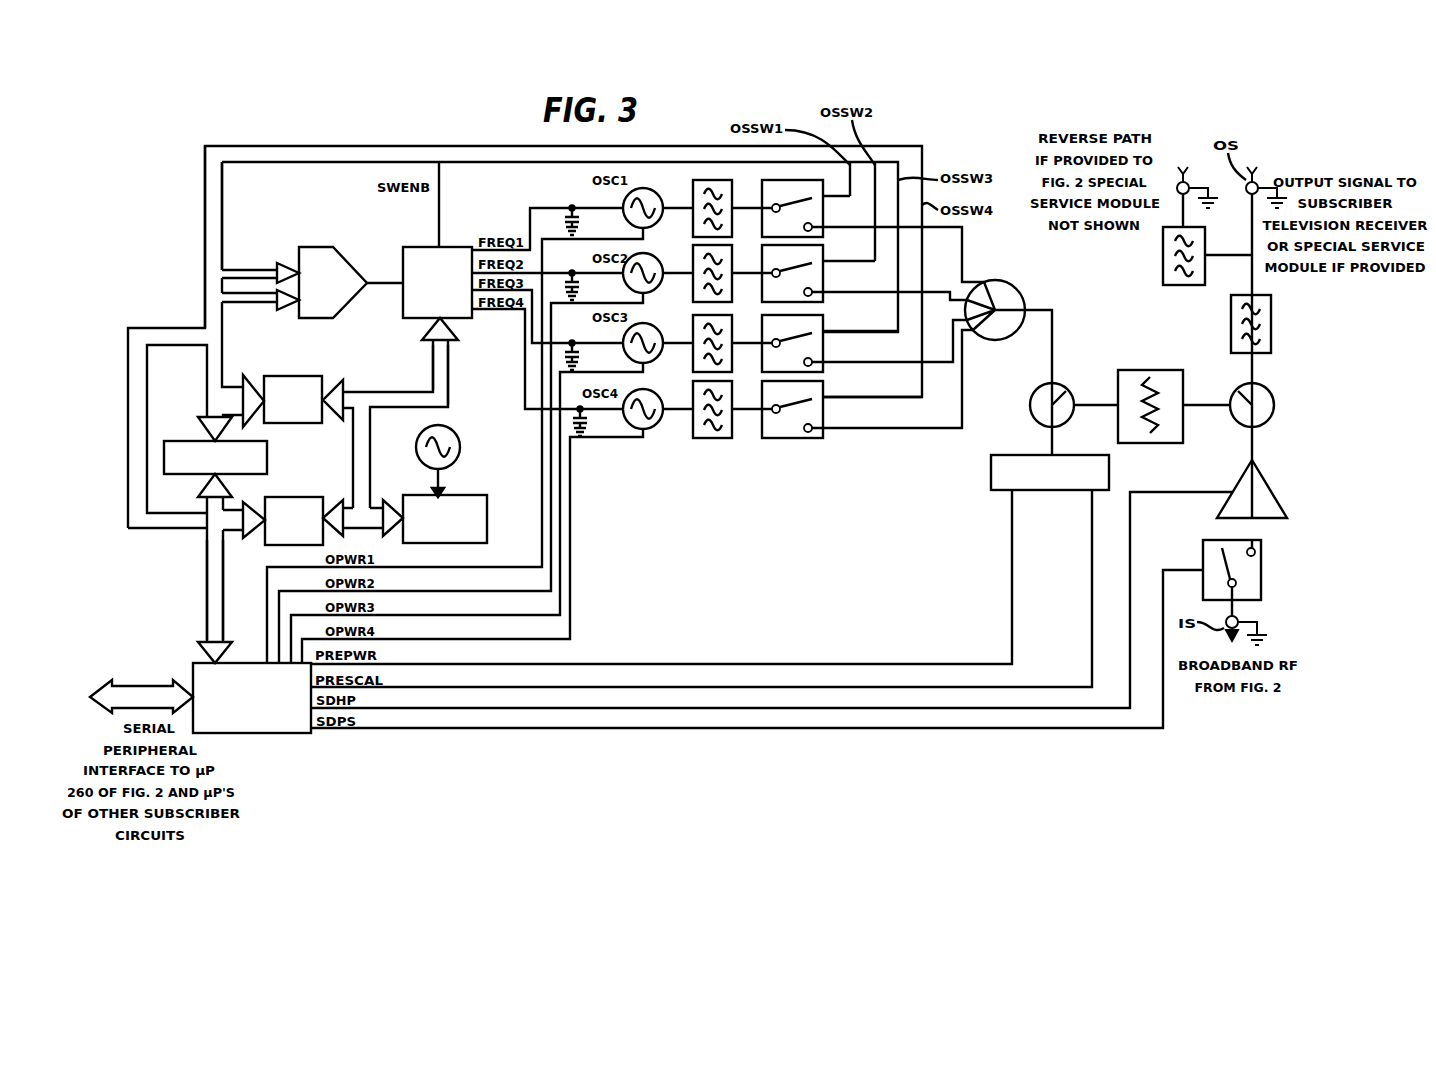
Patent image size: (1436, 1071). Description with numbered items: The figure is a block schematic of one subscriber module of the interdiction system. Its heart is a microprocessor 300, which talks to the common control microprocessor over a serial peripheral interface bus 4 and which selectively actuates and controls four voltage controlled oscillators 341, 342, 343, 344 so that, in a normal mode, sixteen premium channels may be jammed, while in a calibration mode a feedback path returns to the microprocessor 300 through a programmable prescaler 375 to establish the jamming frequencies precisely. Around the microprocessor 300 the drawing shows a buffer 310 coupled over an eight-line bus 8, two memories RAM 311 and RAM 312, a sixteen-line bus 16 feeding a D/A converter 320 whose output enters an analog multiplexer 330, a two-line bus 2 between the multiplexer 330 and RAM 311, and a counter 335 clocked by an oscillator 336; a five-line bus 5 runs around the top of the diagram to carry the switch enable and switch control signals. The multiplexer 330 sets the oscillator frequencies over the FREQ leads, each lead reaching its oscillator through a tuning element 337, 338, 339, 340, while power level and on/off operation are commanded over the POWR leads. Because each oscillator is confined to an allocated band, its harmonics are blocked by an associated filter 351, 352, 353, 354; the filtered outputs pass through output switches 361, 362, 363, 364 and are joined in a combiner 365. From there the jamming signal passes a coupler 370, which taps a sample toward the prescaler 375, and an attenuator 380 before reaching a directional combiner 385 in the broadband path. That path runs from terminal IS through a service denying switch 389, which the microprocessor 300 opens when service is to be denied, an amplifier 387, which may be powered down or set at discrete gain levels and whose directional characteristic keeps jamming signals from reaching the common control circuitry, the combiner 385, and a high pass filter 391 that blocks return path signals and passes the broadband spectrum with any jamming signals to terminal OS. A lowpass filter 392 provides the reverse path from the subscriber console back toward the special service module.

The 5-bit bus 5 is at (197, 222).
The 16-bit bus 16 is at (228, 298).
The 2-bit bus 2 is at (427, 373).
The 8-bit bus 8 is at (202, 593).
The 4-wire serial peripheral interface bus 4 is at (118, 713).
The microprocessor 300 is at (297, 733).
The buffer 310 is at (122, 452).
The RAM 311 is at (284, 376).
The RAM 312 is at (290, 497).
The D/A converter 320 is at (313, 247).
The analog multiplexer 330 is at (412, 247).
The counter 335 is at (488, 532).
The reference oscillator 336 is at (461, 447).
The tuning capacitor 337 is at (570, 207).
The tuning capacitor 338 is at (566, 283).
The tuning capacitor 339 is at (566, 353).
The tuning capacitor 340 is at (585, 432).
The voltage controlled oscillator 341 is at (629, 221).
The voltage controlled oscillator 342 is at (629, 286).
The voltage controlled oscillator 343 is at (629, 355).
The voltage controlled oscillator 344 is at (656, 424).
The filter 351 is at (693, 200).
The filter 352 is at (693, 264).
The filter 353 is at (693, 330).
The filter 354 is at (693, 397).
The output switch 361 is at (823, 212).
The output switch 362 is at (823, 280).
The output switch 363 is at (823, 351).
The output switch 364 is at (823, 414).
The signal combiner 365 is at (994, 281).
The directional coupler 370 is at (1032, 397).
The prescaler 375 is at (991, 470).
The attenuator 380 is at (1156, 370).
The directional combiner 385 is at (1270, 412).
The amplifier 387 is at (1238, 483).
The service denying switch 389 is at (1203, 548).
The high pass filter 391 is at (1271, 332).
The lowpass filter 392 is at (1163, 262).